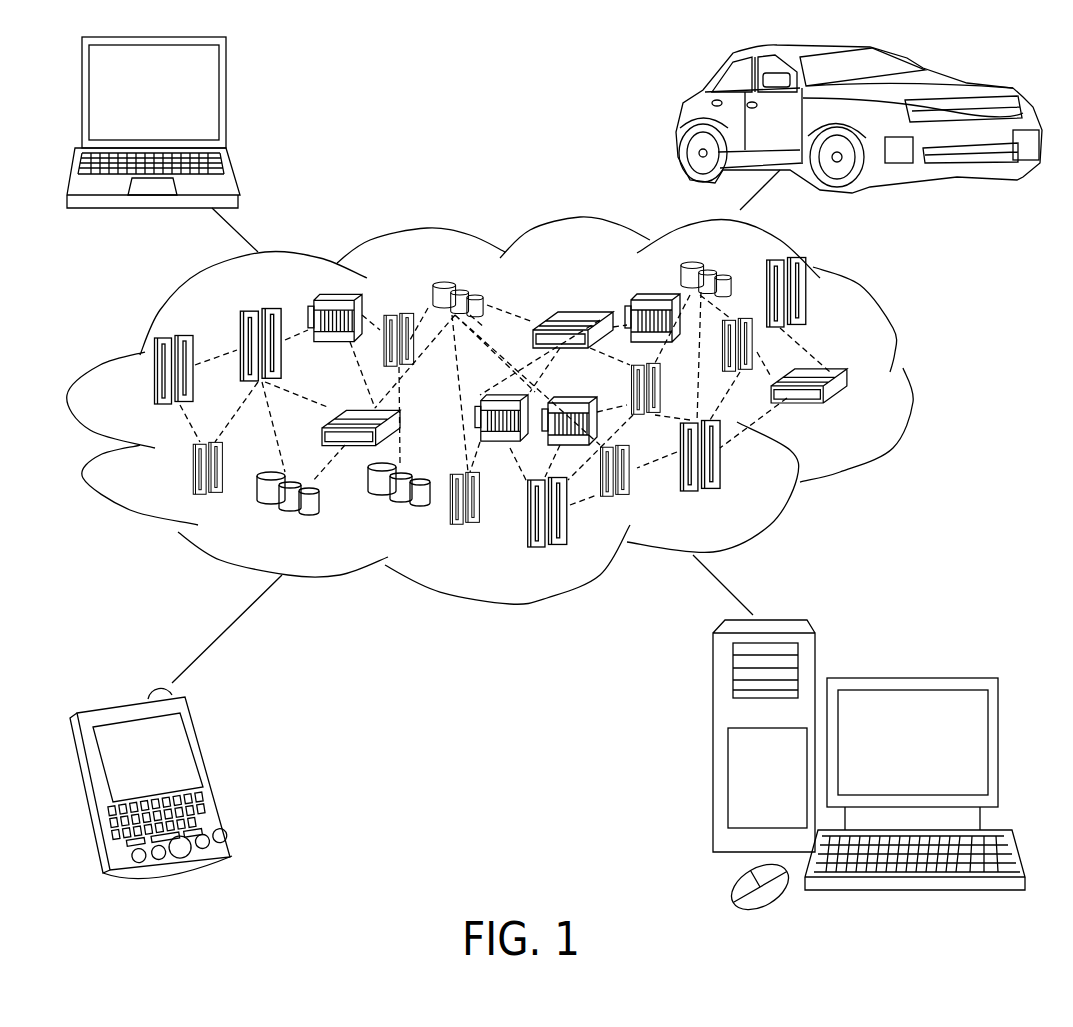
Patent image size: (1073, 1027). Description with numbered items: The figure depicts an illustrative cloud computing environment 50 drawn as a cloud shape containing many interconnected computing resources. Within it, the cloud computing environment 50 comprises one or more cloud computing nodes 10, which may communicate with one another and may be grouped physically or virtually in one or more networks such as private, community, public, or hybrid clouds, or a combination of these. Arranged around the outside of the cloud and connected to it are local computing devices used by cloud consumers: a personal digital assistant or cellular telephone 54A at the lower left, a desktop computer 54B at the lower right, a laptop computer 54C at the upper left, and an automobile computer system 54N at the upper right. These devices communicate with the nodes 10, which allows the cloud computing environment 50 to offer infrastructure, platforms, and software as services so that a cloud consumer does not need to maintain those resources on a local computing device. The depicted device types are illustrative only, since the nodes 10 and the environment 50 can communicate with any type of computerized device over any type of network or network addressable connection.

The cloud computing node 10 is at (850, 412).
The cloud computing environment 50 is at (903, 380).
The personal digital assistant or cellular telephone 54A is at (213, 770).
The desktop computer 54B is at (910, 678).
The laptop computer 54C is at (225, 100).
The automobile computer system 54N is at (682, 120).